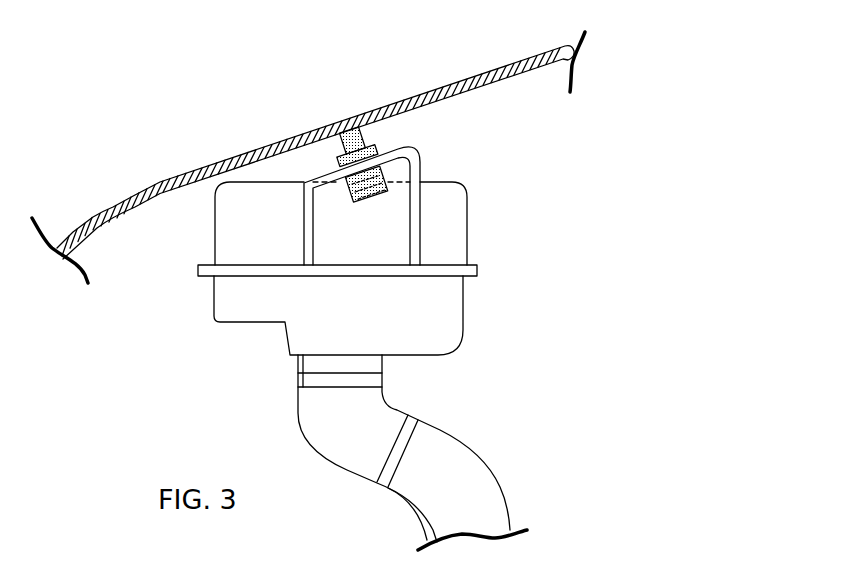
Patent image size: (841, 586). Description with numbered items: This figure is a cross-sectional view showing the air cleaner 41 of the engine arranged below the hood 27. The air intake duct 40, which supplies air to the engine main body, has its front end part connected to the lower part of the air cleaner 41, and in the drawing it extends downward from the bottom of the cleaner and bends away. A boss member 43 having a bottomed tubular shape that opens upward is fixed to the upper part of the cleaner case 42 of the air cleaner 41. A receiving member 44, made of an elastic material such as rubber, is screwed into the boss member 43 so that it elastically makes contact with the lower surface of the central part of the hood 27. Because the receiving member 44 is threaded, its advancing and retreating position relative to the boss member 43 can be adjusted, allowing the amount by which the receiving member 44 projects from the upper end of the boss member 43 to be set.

The hood 27 is at (464, 79).
The air intake duct 40 is at (478, 473).
The air cleaner 41 is at (384, 245).
The cleaner case 42 is at (453, 200).
The boss member 43 is at (350, 196).
The receiving member 44 is at (342, 128).